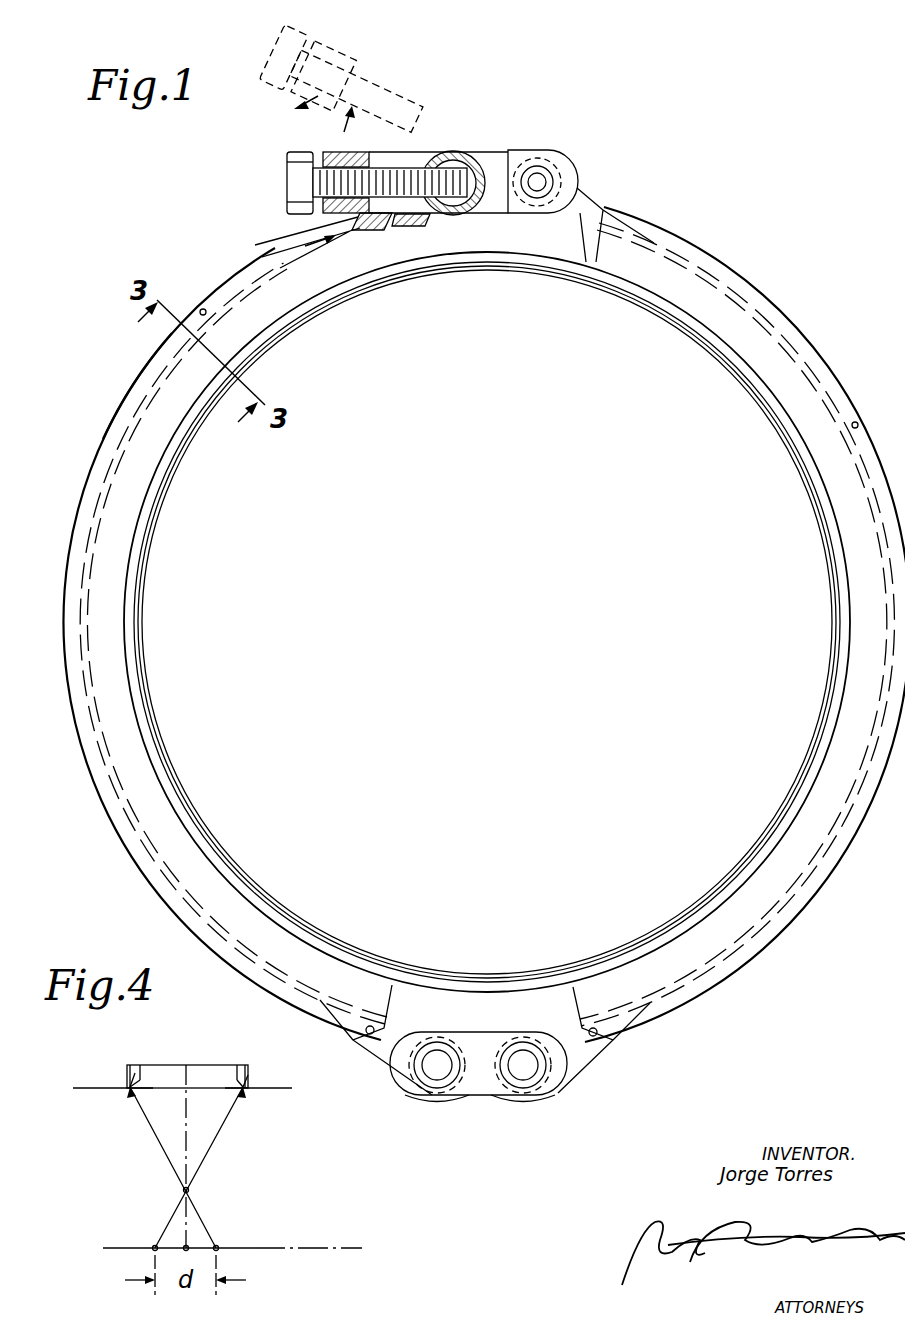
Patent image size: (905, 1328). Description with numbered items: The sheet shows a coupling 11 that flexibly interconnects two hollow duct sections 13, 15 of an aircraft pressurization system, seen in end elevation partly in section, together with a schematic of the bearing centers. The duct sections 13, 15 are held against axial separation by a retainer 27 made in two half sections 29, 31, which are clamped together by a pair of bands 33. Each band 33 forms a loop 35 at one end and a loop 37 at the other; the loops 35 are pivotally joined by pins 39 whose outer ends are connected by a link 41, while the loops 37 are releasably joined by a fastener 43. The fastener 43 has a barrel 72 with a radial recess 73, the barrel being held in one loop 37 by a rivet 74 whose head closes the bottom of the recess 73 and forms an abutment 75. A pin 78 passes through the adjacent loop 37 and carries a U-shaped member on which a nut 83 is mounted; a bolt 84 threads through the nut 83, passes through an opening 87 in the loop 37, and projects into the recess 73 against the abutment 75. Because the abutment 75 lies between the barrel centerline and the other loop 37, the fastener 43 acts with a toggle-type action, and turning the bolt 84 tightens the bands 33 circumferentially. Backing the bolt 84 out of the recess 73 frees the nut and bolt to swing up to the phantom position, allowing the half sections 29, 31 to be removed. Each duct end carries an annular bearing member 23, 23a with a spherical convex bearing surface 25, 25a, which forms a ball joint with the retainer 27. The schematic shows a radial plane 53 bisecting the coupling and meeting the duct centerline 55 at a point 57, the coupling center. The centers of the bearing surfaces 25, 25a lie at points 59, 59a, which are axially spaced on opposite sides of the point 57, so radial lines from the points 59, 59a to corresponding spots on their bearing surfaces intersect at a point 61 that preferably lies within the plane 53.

In FIG. 1, the coupling 11 is at (680, 214).
In FIG. 4, the duct section 13 is at (276, 1086).
In FIG. 4, the duct section 15 is at (84, 1085).
In FIG. 4, the bearing member 23 is at (233, 1083).
In FIG. 4, the bearing member 23a is at (125, 1083).
In FIG. 4, the bearing surface 25 is at (246, 1083).
In FIG. 4, the bearing surface 25a is at (128, 1082).
In FIG. 1, the retainer 27 is at (789, 306).
In FIG. 4, the retainer 27 is at (190, 1060).
In FIG. 1, the half section 29 is at (170, 400).
In FIG. 1, the half section 31 is at (772, 368).
In FIG. 1, the band 33 is at (703, 268).
In FIG. 1, the loop 35 is at (378, 1053).
In FIG. 1, the loop 37 is at (393, 232).
In FIG. 1, the pin 39 is at (437, 1052).
In FIG. 1, the link 41 is at (482, 1096).
In FIG. 1, the fastener 43 is at (320, 62).
In FIG. 4, the radially extending plane 53 is at (187, 1140).
In FIG. 4, the centerline 55 is at (305, 1247).
In FIG. 4, the point 57 is at (190, 1246).
In FIG. 4, the point 59 is at (153, 1246).
In FIG. 4, the point 59a is at (220, 1246).
In FIG. 4, the point 61 is at (183, 1190).
In FIG. 1, the barrel 72 is at (450, 156).
In FIG. 1, the recess 73 is at (593, 188).
In FIG. 1, the rivet 74 is at (510, 150).
In FIG. 1, the abutment 75 is at (462, 210).
In FIG. 1, the pin 78 is at (538, 182).
In FIG. 1, the nut 83 is at (325, 228).
In FIG. 1, the bolt 84 is at (300, 180).
In FIG. 1, the opening 87 is at (426, 156).